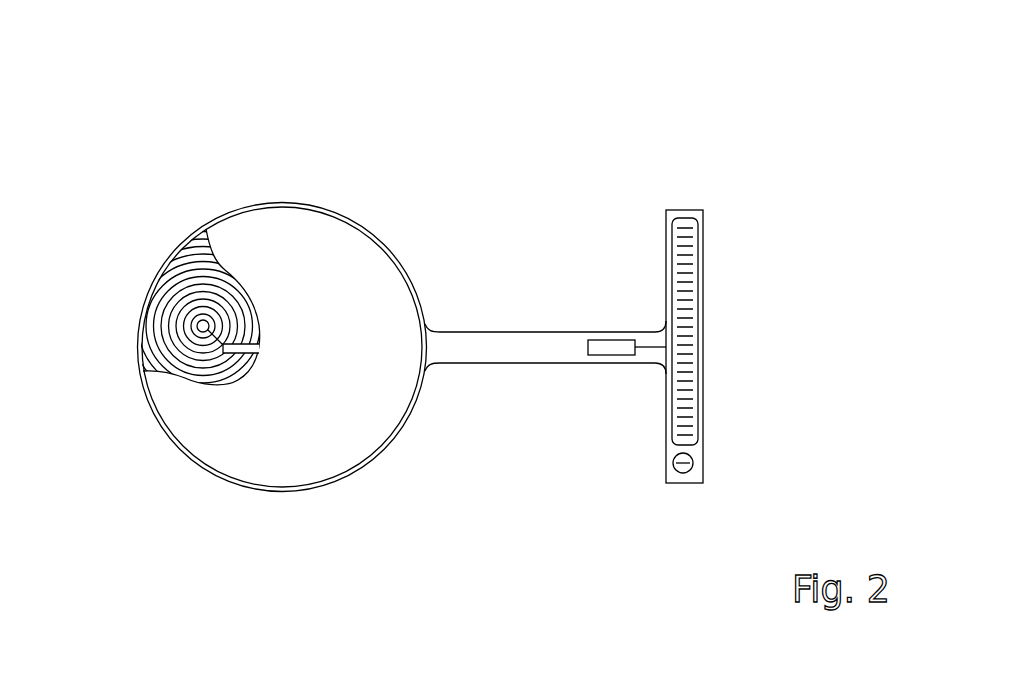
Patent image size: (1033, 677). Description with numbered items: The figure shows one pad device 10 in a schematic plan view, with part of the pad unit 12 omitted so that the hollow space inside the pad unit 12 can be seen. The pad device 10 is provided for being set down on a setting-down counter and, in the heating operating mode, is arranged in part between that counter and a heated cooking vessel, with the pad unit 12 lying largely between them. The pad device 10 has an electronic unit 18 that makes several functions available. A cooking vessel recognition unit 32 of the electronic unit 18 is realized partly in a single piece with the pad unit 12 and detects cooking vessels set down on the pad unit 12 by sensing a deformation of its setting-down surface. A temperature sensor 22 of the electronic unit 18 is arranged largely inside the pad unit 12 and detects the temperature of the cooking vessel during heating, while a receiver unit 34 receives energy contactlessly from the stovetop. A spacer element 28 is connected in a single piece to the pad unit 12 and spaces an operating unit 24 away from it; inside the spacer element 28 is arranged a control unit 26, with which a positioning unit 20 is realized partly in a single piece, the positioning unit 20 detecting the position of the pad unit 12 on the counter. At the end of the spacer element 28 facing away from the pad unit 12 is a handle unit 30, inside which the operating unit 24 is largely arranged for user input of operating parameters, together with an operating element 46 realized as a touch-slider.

The pad device 10 is at (455, 267).
The pad unit 12 is at (358, 255).
The electronic unit 18 is at (724, 243).
The positioning unit 20 is at (600, 348).
The temperature sensor 22 is at (197, 327).
The operating unit 24 is at (711, 292).
The control unit 26 is at (611, 284).
The spacer element 28 is at (530, 346).
The handle unit 30 is at (685, 214).
The cooking vessel recognition unit 32 is at (287, 242).
The receiver unit 34 is at (194, 282).
The operating element 46 is at (688, 358).